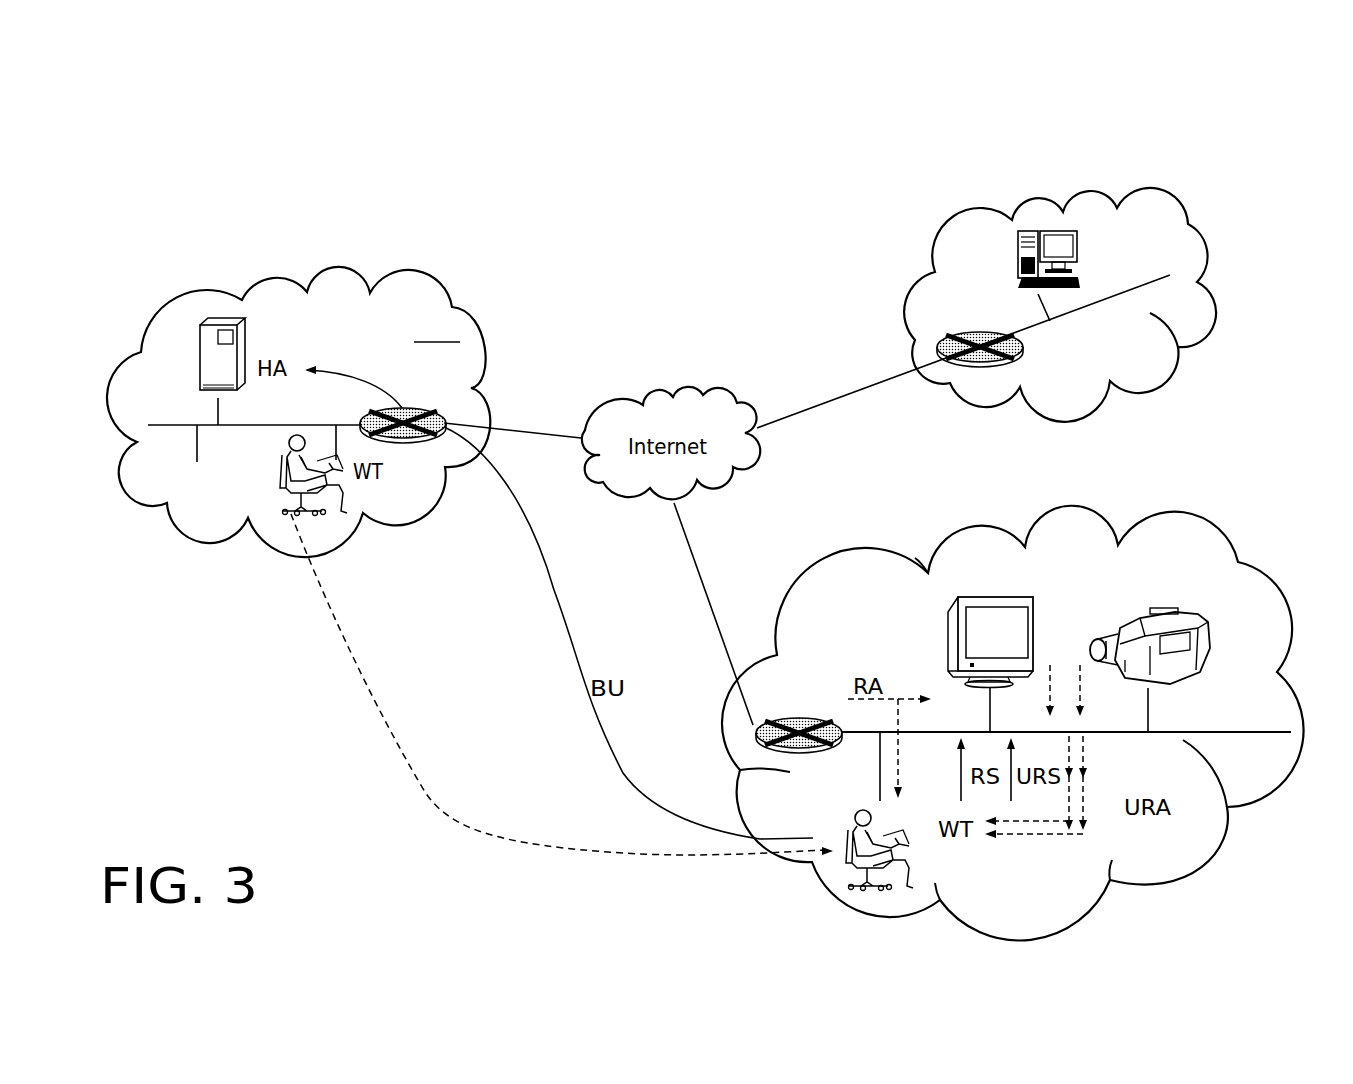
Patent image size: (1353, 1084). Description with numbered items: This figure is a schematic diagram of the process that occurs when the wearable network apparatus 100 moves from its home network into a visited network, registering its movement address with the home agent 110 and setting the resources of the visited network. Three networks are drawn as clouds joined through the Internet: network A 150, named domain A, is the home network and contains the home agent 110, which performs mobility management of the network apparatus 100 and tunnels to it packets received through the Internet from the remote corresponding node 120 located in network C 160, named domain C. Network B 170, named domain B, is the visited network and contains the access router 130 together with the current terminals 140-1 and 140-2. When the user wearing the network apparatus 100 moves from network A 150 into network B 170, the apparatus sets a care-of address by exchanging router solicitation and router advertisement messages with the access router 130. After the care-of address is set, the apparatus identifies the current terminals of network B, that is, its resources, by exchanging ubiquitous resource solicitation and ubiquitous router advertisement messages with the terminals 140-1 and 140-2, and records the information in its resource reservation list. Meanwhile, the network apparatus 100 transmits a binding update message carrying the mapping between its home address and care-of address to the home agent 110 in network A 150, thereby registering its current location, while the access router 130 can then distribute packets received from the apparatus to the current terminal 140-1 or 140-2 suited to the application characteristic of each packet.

The network apparatus 100 is at (347, 493).
The home agent 110 is at (200, 347).
The corresponding node 120 is at (1070, 228).
The access router 130 is at (807, 752).
The current terminal 140-1 is at (955, 638).
The current terminal 140-2 is at (1197, 662).
The network A 150 is at (358, 268).
The network C 160 is at (907, 283).
The network B 170 is at (1006, 511).